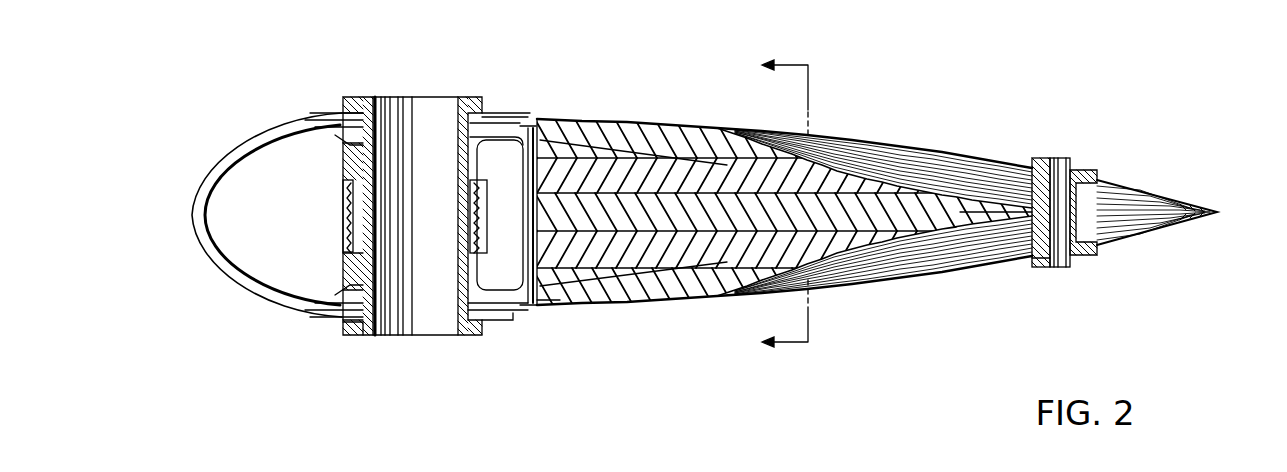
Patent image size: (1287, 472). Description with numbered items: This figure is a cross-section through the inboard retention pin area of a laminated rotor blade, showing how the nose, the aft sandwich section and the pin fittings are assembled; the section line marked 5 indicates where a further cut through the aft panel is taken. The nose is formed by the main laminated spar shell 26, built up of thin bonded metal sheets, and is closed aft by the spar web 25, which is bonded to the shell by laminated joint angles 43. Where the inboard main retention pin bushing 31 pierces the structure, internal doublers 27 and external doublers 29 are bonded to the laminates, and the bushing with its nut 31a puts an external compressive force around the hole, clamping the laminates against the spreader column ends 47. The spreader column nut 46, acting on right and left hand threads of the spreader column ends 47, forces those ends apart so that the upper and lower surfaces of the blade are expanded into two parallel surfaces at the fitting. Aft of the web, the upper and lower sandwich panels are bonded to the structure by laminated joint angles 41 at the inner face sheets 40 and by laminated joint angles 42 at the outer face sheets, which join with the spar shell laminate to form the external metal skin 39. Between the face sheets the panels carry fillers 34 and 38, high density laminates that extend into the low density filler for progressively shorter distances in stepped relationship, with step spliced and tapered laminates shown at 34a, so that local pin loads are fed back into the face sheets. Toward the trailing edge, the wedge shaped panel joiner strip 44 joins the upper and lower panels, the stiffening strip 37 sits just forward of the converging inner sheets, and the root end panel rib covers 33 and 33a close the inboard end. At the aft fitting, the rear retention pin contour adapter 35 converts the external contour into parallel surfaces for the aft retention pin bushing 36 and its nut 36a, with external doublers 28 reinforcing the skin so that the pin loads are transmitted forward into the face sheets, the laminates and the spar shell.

The spar web 25 is at (526, 186).
The main laminated spar shell 26 is at (232, 150).
The internal doublers 27 is at (337, 127).
The external doublers 28 is at (1110, 183).
The external doublers 29 is at (350, 100).
The inboard main retention pin bushing 31 is at (385, 97).
The nut 31a is at (352, 337).
The root end panel rib cover 33 is at (953, 280).
The root end panel rib cover 33a is at (903, 280).
The filler 34 is at (660, 147).
The step spliced filler laminates 34a is at (813, 303).
The rear retention pin contour adapter 35 is at (1090, 168).
The aft retention pin bushing 36 is at (1050, 160).
The nut 36a is at (1090, 282).
The stiffening strip 37 is at (1187, 200).
The filler 38 is at (827, 157).
The external metal skin 39 is at (907, 152).
The inner face sheets 40 is at (575, 308).
The laminated joint angles 41 is at (548, 136).
The laminated joint angles 42 is at (540, 130).
The laminated joint angles 43 is at (537, 128).
The wedge shaped panel joiner strip 44 is at (977, 207).
The spreader column nut 46 is at (340, 212).
The spreader column ends 47 is at (345, 143).
The section line 5 is at (774, 203).